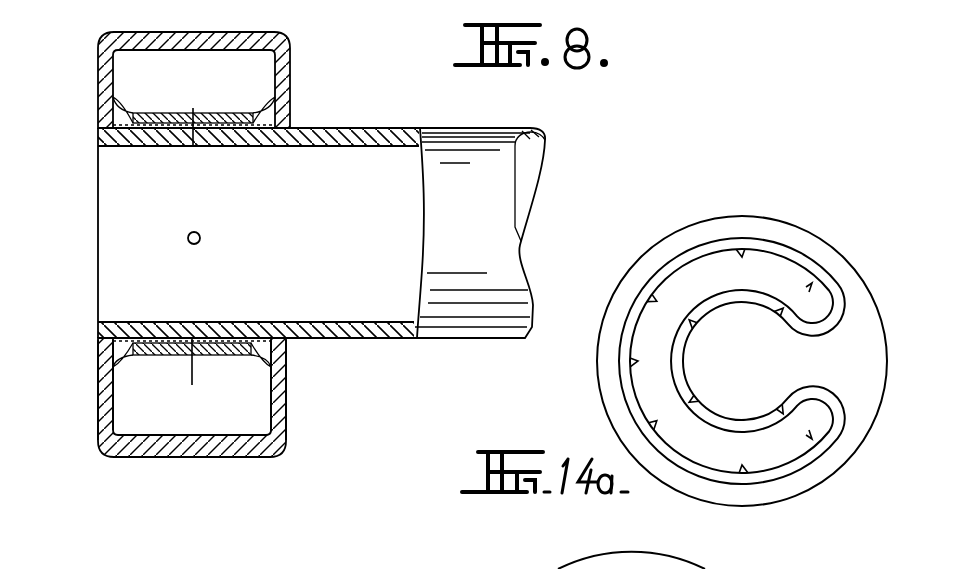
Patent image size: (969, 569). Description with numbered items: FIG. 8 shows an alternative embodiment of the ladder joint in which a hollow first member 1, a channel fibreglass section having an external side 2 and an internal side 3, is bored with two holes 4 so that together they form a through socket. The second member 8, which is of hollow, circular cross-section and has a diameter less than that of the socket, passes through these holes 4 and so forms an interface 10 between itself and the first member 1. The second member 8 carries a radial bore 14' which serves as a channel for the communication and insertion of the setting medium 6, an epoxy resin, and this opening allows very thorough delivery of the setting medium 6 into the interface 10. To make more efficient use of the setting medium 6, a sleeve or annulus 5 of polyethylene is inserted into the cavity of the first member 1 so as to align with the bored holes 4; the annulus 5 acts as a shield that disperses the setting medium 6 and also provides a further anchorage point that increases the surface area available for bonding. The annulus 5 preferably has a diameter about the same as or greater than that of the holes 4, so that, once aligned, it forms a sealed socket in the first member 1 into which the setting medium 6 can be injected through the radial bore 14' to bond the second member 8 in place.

The first member 1 is at (173, 447).
The external side 2 is at (103, 380).
The internal side 3 is at (288, 410).
The hole 4 is at (103, 105).
The annulus 5 is at (193, 108).
The setting medium 6 is at (123, 363).
The second member 8 is at (511, 196).
The interface 10 is at (170, 323).
The opening 14' is at (166, 196).